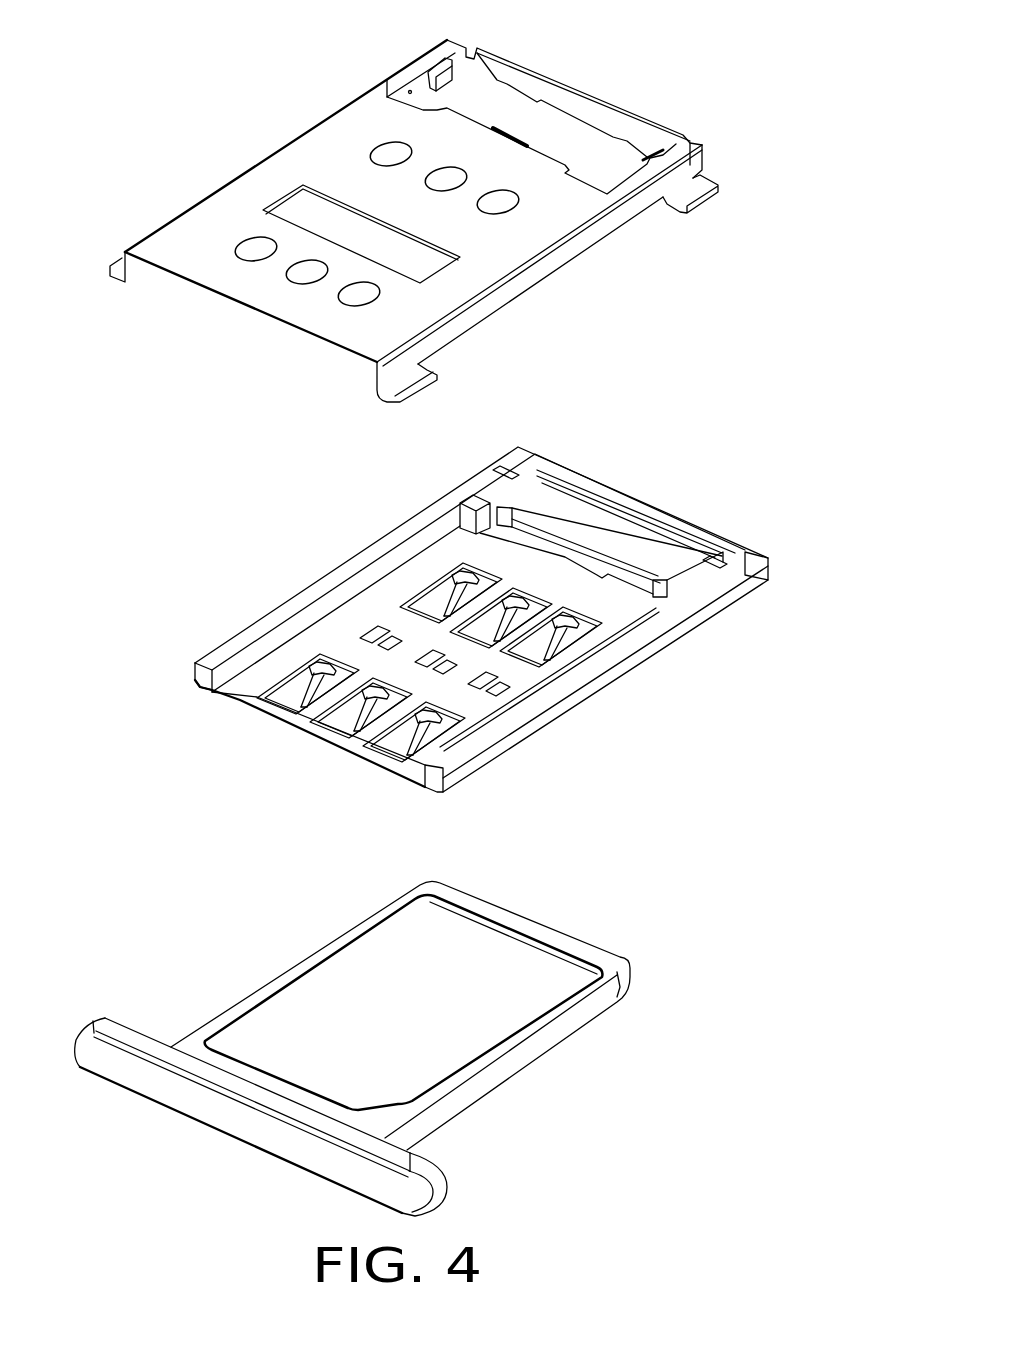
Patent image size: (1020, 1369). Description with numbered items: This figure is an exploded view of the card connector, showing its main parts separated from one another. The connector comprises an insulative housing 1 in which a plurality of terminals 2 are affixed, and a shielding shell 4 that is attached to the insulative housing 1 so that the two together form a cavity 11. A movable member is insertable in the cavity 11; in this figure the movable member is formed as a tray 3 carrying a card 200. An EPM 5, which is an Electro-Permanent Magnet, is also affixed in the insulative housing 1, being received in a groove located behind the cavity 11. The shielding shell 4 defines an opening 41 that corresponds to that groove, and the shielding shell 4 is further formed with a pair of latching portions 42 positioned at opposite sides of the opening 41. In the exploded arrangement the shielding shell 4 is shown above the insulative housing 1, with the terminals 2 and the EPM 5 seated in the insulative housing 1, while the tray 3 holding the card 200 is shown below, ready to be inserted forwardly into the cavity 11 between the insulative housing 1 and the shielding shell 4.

The insulative housing 1 is at (481, 636).
The terminals 2 is at (453, 577).
The tray 3 is at (388, 1048).
The shielding shell 4 is at (414, 206).
The EPM 5 is at (592, 520).
The cavity 11 is at (468, 708).
The opening 41 is at (577, 137).
The latching portions 42 is at (443, 78).
The card 200 is at (518, 963).